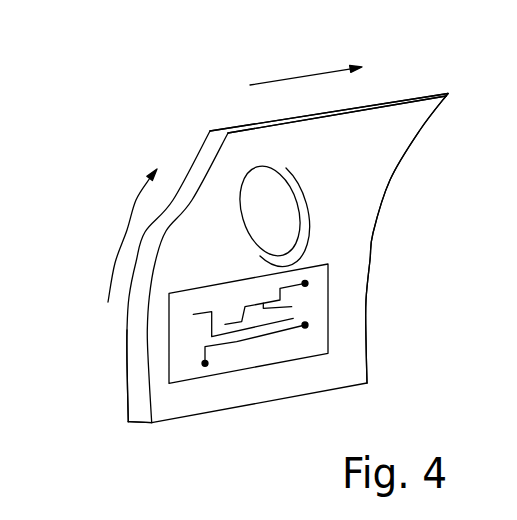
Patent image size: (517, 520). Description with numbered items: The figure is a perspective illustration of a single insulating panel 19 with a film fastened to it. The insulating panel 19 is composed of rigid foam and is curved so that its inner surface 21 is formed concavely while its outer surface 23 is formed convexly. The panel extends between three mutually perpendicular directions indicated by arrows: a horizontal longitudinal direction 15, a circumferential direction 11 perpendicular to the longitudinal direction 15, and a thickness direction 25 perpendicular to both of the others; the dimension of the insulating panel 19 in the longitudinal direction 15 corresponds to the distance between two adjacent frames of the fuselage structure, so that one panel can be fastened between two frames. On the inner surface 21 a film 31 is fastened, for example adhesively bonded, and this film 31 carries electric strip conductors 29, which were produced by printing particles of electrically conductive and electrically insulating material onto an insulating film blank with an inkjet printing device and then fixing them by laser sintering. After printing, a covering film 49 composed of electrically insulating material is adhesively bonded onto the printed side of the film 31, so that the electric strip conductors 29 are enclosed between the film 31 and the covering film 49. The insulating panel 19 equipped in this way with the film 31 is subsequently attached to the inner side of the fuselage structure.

The circumferential direction 11 is at (126, 231).
The horizontal longitudinal direction 15 is at (298, 77).
The insulating panel 19 is at (355, 164).
The inner surface 21 is at (354, 246).
The outer surface 23 is at (202, 112).
The thickness direction 25 is at (115, 402).
The electric strip conductors 29 is at (239, 342).
The film 31 is at (317, 300).
The covering film 49 is at (342, 334).